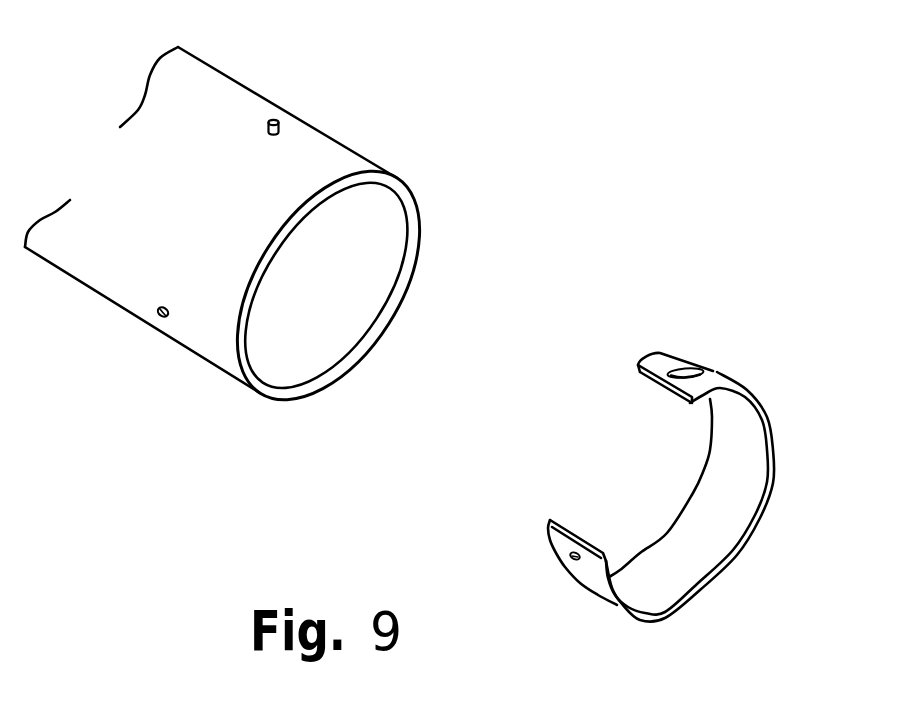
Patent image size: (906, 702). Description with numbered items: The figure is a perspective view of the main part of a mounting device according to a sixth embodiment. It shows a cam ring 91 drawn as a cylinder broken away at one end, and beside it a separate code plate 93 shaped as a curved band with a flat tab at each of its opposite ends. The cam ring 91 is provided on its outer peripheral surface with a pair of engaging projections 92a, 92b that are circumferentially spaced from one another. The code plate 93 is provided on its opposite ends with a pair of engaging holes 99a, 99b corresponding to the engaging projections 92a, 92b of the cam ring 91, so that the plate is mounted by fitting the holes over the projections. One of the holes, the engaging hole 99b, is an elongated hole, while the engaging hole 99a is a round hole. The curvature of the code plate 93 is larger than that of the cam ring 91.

The cam ring 91 is at (228, 88).
The engaging projection 92a is at (158, 313).
The engaging projection 92b is at (280, 108).
The code plate 93 is at (773, 472).
The engaging hole 99a is at (567, 563).
The engaging hole 99b is at (683, 368).